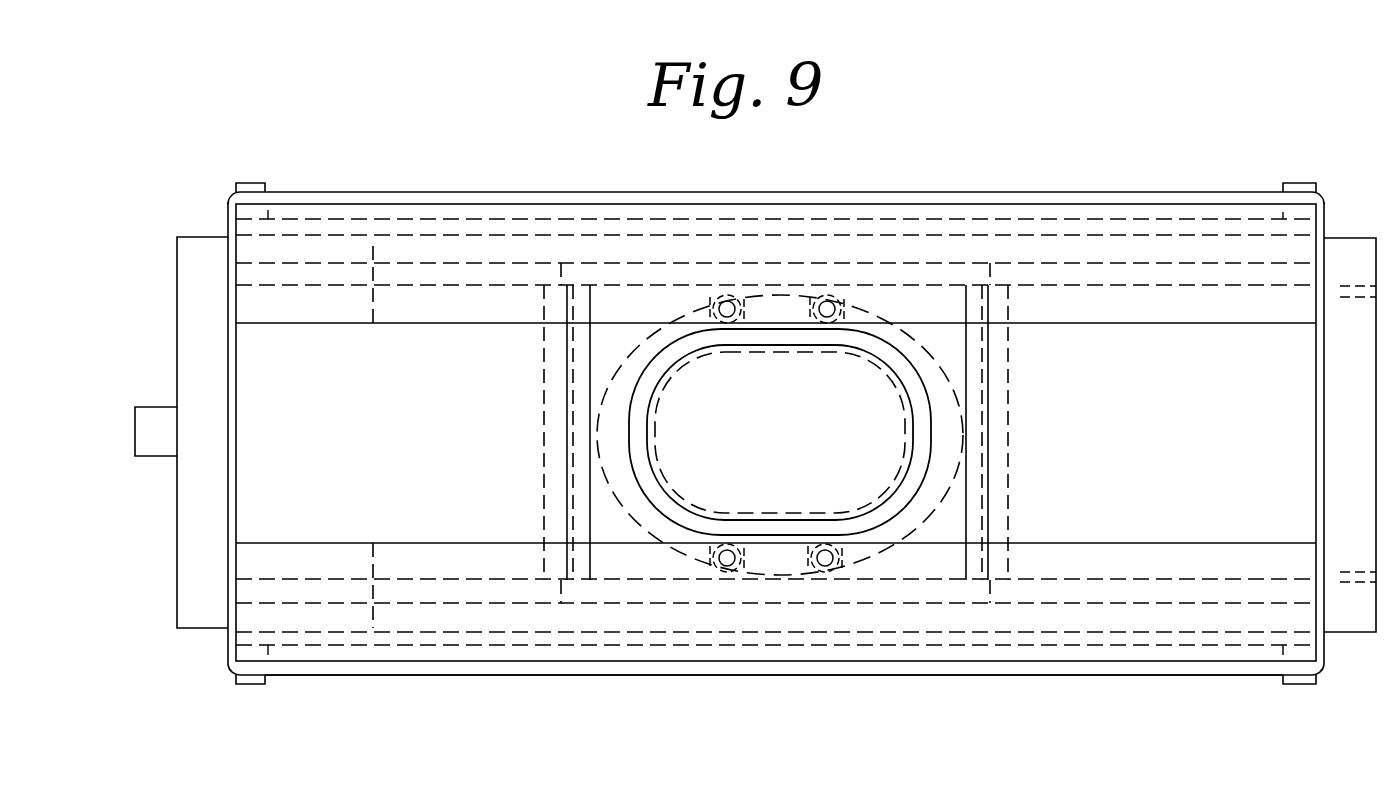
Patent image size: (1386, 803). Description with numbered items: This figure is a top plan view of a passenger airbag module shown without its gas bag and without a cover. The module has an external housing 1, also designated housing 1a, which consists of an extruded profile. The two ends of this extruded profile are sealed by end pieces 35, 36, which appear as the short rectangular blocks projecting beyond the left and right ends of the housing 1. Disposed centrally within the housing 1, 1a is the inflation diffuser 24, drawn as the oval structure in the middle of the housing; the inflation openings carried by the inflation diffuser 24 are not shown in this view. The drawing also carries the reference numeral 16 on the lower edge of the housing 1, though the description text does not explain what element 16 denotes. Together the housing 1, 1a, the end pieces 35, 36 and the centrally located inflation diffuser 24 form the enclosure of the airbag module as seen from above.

The external housing 1 is at (506, 195).
The housing 1a is at (506, 195).
The bottom plate 16 is at (503, 662).
The inflation diffuser 24 is at (838, 376).
The end piece 35 is at (203, 247).
The end piece 36 is at (1345, 255).